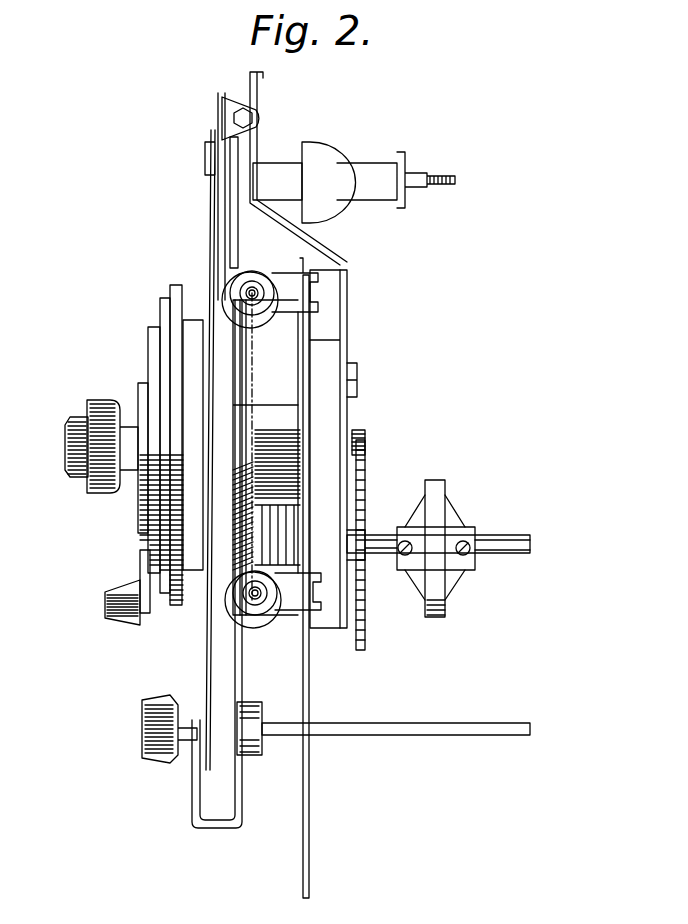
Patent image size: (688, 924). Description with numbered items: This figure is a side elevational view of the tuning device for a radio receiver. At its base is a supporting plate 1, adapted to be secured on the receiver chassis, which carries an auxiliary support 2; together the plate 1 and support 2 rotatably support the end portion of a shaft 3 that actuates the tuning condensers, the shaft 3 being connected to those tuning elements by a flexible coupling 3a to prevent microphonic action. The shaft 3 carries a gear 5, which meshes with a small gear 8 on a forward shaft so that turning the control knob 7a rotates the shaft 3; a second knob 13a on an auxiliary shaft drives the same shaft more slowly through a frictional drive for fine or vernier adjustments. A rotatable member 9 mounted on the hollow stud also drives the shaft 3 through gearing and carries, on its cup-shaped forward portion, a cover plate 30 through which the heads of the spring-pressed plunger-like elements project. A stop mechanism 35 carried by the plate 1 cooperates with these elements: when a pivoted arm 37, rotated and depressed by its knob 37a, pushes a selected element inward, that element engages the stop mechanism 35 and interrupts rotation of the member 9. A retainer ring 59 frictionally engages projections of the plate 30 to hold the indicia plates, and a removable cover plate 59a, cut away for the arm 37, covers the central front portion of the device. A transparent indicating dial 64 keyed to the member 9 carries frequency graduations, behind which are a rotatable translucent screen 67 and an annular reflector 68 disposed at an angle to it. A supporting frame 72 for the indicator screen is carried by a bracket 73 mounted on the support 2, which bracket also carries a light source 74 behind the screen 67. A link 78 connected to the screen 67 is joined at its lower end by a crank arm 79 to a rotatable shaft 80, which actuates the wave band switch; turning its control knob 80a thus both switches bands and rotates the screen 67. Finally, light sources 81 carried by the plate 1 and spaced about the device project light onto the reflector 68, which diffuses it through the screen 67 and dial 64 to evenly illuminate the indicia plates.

The supporting plate 1 is at (309, 701).
The auxiliary support 2 is at (318, 630).
The shaft 3 is at (387, 528).
The flexible coupling 3a is at (440, 492).
The gear 5 is at (366, 646).
The control knob 7a is at (100, 400).
The small gear 8 is at (366, 432).
The rotatable member 9 is at (260, 405).
The knob 13a is at (70, 420).
The cover plate 30 is at (190, 320).
The stop mechanism 35 is at (290, 504).
The pivoted arm 37 is at (140, 555).
The knob 37a is at (110, 617).
The retainer ring 59 is at (170, 290).
The cover plate 59a is at (148, 345).
The transparent indicating dial member 64 is at (206, 244).
The translucent screen 67 is at (236, 254).
The annular reflector 68 is at (250, 357).
The supporting frame 72 is at (232, 108).
The bracket 73 is at (322, 252).
The light source 74 is at (322, 156).
The link 78 is at (243, 686).
The crank arm 79 is at (238, 712).
The rotatable shaft 80 is at (438, 730).
The control knob 80a is at (142, 728).
The light sources 81 is at (262, 293).